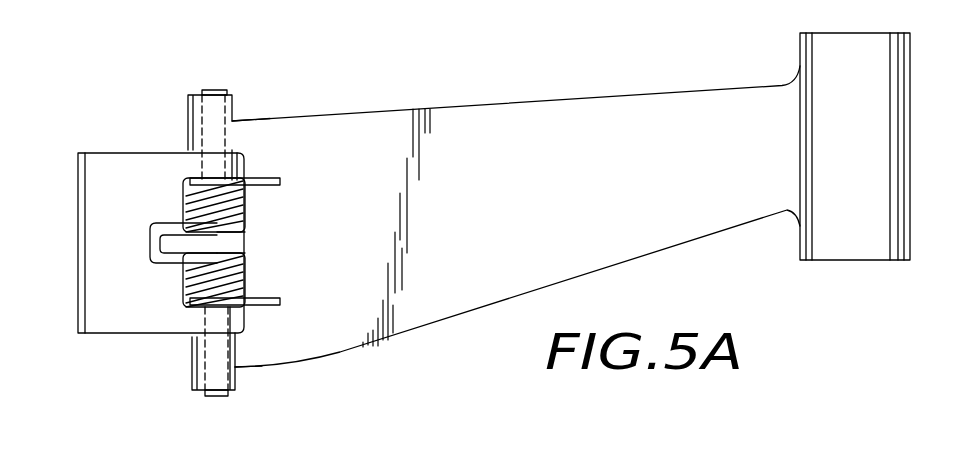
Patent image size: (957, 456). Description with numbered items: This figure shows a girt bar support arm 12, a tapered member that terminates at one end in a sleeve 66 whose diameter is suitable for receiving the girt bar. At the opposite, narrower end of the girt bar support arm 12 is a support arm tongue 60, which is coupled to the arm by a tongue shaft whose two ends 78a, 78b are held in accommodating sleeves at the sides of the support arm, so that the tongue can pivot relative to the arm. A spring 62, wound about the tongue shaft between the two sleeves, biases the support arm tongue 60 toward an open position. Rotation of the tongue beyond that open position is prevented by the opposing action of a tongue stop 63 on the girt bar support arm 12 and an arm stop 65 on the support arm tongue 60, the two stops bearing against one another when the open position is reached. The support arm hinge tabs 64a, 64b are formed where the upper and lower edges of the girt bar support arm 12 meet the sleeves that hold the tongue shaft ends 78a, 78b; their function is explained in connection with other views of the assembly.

The girt bar support arm 12 is at (547, 100).
The support arm tongue 60 is at (155, 337).
The spring 62 is at (157, 228).
The tongue stop 63 is at (217, 247).
The support arm hinge tab 64a is at (237, 112).
The support arm hinge tab 64b is at (238, 370).
The arm stop 65 is at (165, 247).
The sleeve 66 is at (910, 133).
The tongue shaft 78a is at (216, 90).
The tongue shaft 78b is at (222, 397).